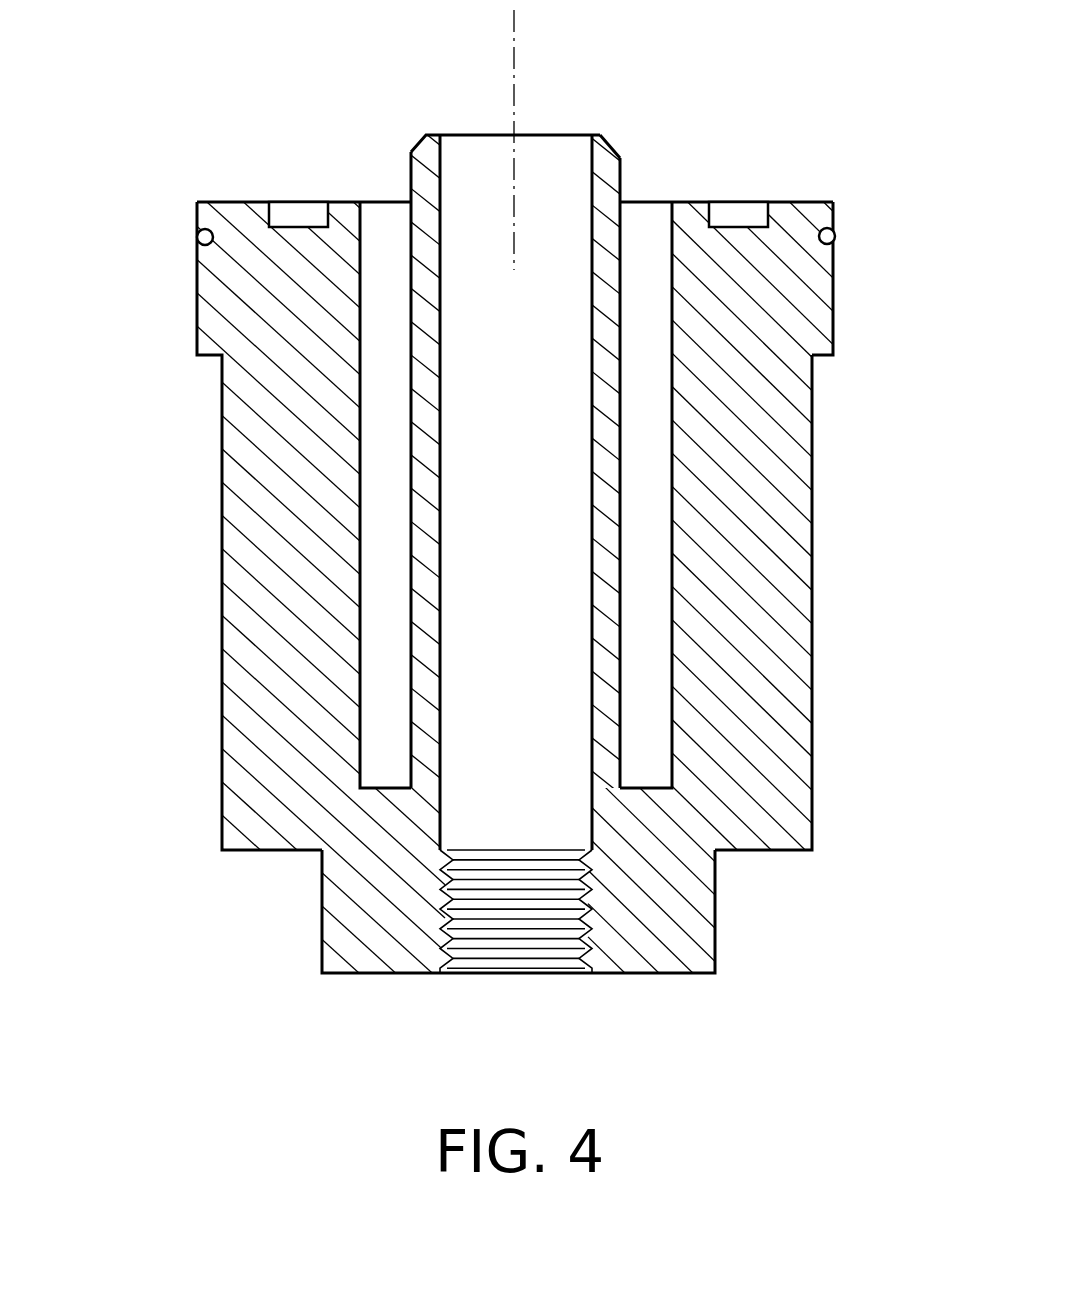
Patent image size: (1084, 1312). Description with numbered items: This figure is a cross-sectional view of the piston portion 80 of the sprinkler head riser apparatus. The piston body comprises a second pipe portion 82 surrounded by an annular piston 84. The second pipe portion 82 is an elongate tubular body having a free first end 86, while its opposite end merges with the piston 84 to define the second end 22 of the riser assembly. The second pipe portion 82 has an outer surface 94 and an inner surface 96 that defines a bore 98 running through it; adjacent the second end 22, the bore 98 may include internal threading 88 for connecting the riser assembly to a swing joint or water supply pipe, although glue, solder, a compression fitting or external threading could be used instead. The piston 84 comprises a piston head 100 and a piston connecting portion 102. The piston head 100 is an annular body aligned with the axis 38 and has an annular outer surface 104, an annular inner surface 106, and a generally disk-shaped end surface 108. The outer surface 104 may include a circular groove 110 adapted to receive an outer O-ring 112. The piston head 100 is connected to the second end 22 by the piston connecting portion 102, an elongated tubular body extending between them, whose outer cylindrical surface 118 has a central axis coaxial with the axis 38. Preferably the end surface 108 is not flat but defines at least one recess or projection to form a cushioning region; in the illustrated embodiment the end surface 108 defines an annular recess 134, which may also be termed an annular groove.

The second end 22 is at (668, 975).
The axis 38 is at (517, 30).
The piston portion 80 is at (780, 119).
The second pipe portion 82 is at (408, 182).
The piston 84 is at (150, 318).
The free first end 86 is at (432, 133).
The internal threading 88 is at (575, 942).
The outer surface 94 is at (623, 160).
The inner surface 96 is at (574, 150).
The bore 98 is at (498, 817).
The piston head 100 is at (230, 200).
The piston connecting portion 102 is at (765, 630).
The annular outer surface 104 is at (837, 305).
The annular inner surface 106 is at (670, 257).
The end surface 108 is at (778, 202).
The circular groove 110 is at (836, 262).
The outer O-ring 112 is at (196, 237).
The outer cylindrical surface 118 is at (813, 747).
The annular recess 134 is at (302, 200).